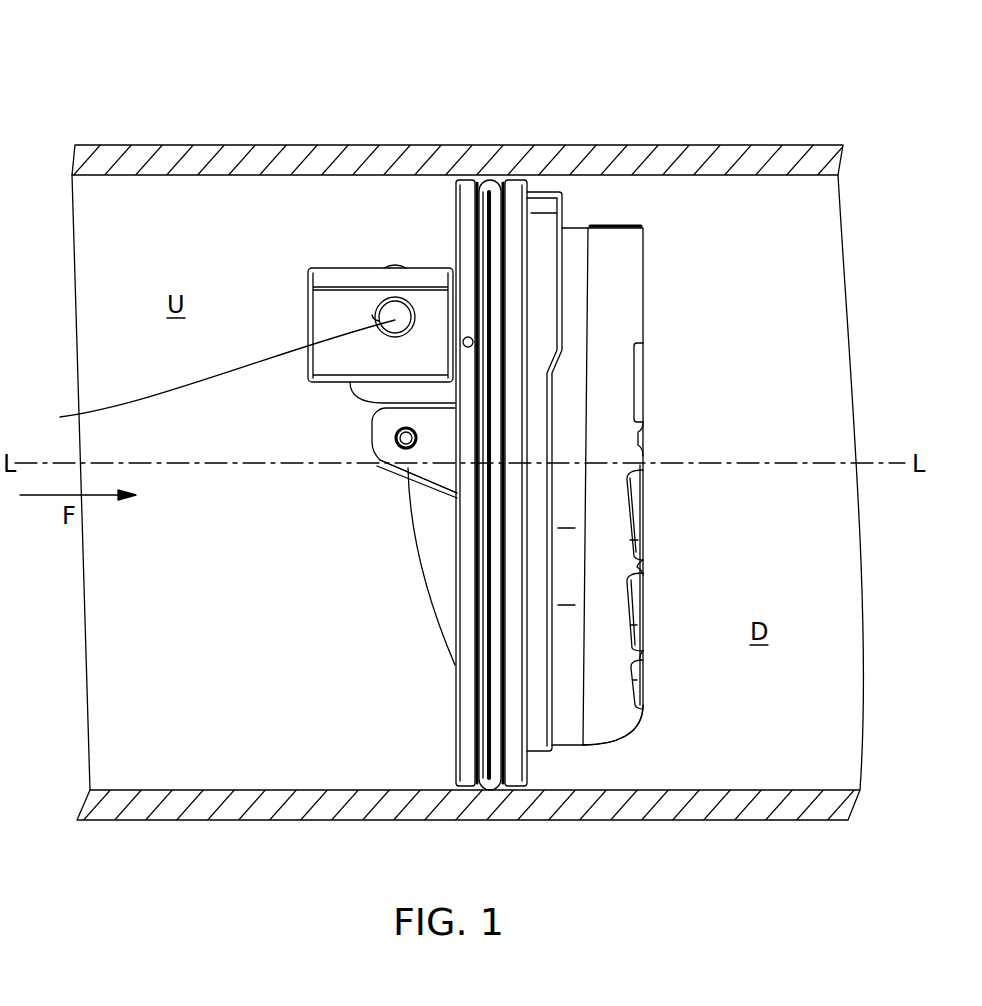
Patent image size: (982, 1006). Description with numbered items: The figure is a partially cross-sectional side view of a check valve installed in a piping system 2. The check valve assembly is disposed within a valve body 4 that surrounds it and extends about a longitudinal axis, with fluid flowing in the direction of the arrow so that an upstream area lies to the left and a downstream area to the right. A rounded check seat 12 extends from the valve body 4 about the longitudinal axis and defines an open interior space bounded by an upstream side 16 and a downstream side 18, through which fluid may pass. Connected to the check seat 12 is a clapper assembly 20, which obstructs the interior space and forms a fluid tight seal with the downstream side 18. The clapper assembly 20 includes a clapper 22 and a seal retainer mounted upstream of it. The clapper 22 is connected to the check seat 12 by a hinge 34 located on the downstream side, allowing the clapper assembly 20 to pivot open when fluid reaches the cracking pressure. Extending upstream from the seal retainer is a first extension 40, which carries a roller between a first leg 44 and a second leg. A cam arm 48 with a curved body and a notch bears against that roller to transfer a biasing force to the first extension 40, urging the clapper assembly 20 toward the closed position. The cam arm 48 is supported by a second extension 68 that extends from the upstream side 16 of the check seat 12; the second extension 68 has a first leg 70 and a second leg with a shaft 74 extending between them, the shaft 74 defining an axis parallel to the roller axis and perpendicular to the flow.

The piping system 2 is at (140, 73).
The valve body 4 is at (217, 163).
The check seat 12 is at (490, 187).
The upstream side 16 is at (453, 202).
The downstream side 18 is at (527, 203).
The clapper assembly 20 is at (603, 550).
The clapper 22 is at (598, 713).
The hinge 34 is at (615, 226).
The first extension 40 is at (430, 455).
The first leg 44 is at (410, 470).
The cam arm 48 is at (438, 568).
The second extension 68 is at (333, 303).
The first leg 70 is at (367, 303).
The shaft 74 is at (216, 376).